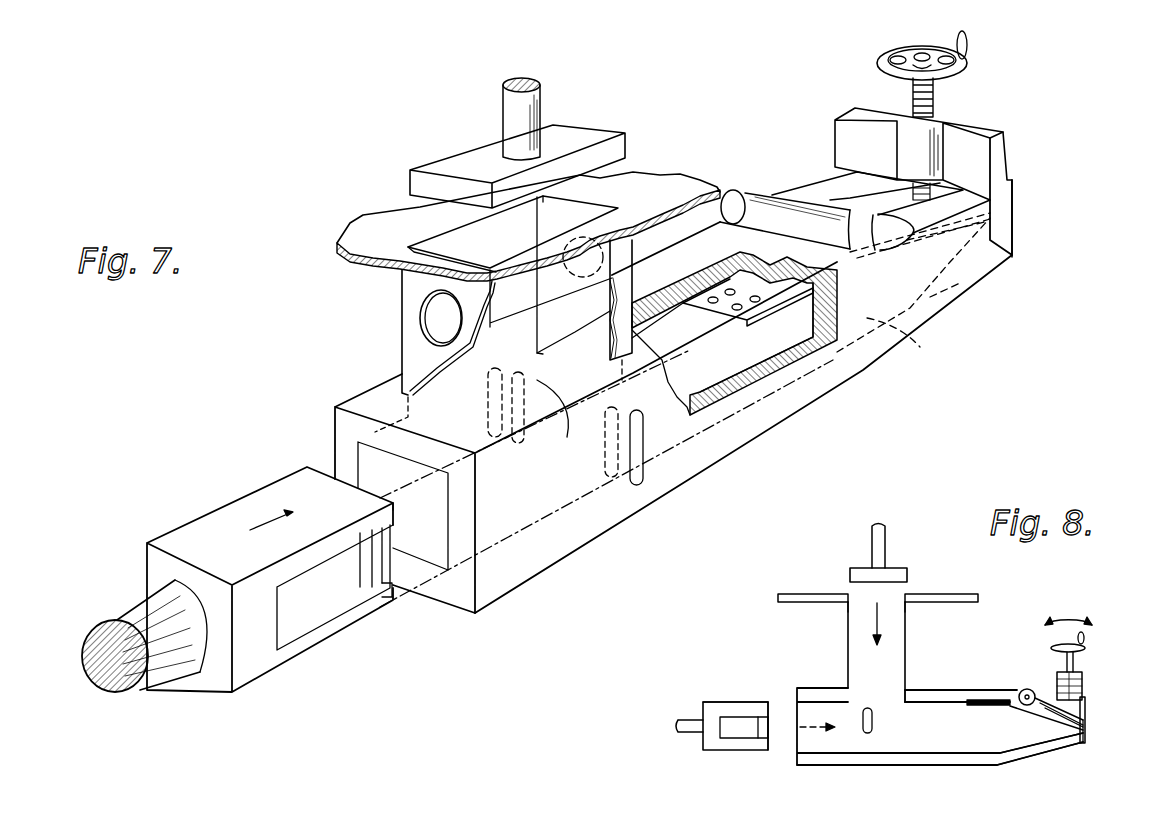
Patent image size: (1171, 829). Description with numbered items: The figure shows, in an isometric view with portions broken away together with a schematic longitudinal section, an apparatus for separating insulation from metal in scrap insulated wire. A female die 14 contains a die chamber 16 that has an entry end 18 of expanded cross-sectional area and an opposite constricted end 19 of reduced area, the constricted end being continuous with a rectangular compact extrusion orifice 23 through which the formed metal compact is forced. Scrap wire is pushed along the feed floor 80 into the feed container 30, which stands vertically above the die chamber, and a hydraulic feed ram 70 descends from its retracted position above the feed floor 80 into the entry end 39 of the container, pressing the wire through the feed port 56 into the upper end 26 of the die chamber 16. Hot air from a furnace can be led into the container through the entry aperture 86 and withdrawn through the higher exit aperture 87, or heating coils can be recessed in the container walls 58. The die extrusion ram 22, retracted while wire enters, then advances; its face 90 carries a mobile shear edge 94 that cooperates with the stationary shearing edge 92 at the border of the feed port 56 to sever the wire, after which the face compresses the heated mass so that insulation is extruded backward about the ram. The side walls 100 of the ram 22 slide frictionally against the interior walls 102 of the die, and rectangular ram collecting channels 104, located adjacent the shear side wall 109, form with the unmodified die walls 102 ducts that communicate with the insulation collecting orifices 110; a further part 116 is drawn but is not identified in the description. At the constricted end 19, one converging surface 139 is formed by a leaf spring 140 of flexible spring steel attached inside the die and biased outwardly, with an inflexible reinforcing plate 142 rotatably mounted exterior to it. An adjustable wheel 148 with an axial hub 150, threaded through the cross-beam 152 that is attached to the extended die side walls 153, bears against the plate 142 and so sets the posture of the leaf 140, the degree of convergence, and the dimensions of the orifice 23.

In FIG. 7, the female die 14 is at (815, 398).
In FIG. 8, the female die 14 is at (992, 758).
In FIG. 7, the die chamber 16 is at (733, 363).
In FIG. 8, the die chamber 16 is at (980, 715).
In FIG. 7, the entry end 18 is at (437, 532).
In FIG. 8, the entry end 18 is at (832, 747).
In FIG. 7, the constricted end 19 is at (947, 290).
In FIG. 8, the constricted end 19 is at (1017, 738).
In FIG. 7, the die extrusion ram 22 is at (274, 562).
In FIG. 8, the die extrusion ram 22 is at (750, 729).
In FIG. 7, the compact extrusion orifice 23 is at (997, 228).
In FIG. 8, the compact extrusion orifice 23 is at (1083, 730).
In FIG. 8, the upper end of the die chamber 26 is at (918, 720).
In FIG. 7, the feed container 30 is at (397, 268).
In FIG. 8, the feed container 30 is at (860, 633).
In FIG. 7, the entry end of the feed container 39 is at (452, 235).
In FIG. 8, the entry end of the feed container 39 is at (860, 602).
In FIG. 7, the feed port 56 is at (558, 421).
In FIG. 7, the container walls 58 is at (405, 353).
In FIG. 7, the feed ram 70 is at (578, 137).
In FIG. 8, the feed ram 70 is at (893, 568).
In FIG. 7, the feed floor 80 is at (511, 233).
In FIG. 8, the feed floor 80 is at (935, 595).
In FIG. 7, the entry aperture 86 is at (435, 318).
In FIG. 7, the exit aperture 87 is at (565, 277).
In FIG. 8, the ram face 90 is at (772, 727).
In FIG. 8, the stationary shearing edge 92 is at (903, 702).
In FIG. 7, the shear edge 94 is at (323, 470).
In FIG. 8, the shear edge 94 is at (767, 703).
In FIG. 7, the ram side walls 100 is at (260, 663).
In FIG. 8, the ram side walls 100 is at (710, 740).
In FIG. 7, the die chamber interior walls 102 is at (890, 318).
In FIG. 7, the ram collecting channel 104 is at (305, 613).
In FIG. 8, the ram collecting channel 104 is at (742, 733).
In FIG. 7, the shear side wall 109 is at (238, 517).
In FIG. 8, the shear side wall 109 is at (722, 700).
In FIG. 7, the insulation collecting orifice 110 is at (520, 440).
In FIG. 8, the insulation collecting orifice 110 is at (870, 735).
In FIG. 7, the piston tip 116 is at (380, 577).
In FIG. 8, the piston tip 116 is at (762, 732).
In FIG. 7, the converging surface 139 is at (742, 198).
In FIG. 8, the converging surface 139 is at (1037, 745).
In FIG. 7, the leaf spring 140 is at (710, 312).
In FIG. 8, the leaf spring 140 is at (1060, 720).
In FIG. 7, the reinforcing plate 142 is at (845, 197).
In FIG. 8, the reinforcing plate 142 is at (1073, 715).
In FIG. 7, the adjustable wheel 148 is at (880, 57).
In FIG. 8, the adjustable wheel 148 is at (1083, 650).
In FIG. 7, the axial hub 150 is at (935, 95).
In FIG. 8, the axial hub 150 is at (1075, 660).
In FIG. 7, the cross-beam 152 is at (982, 122).
In FIG. 8, the cross-beam 152 is at (1082, 680).
In FIG. 7, the extended die side walls 153 is at (1010, 198).
In FIG. 8, the extended die side walls 153 is at (1085, 700).